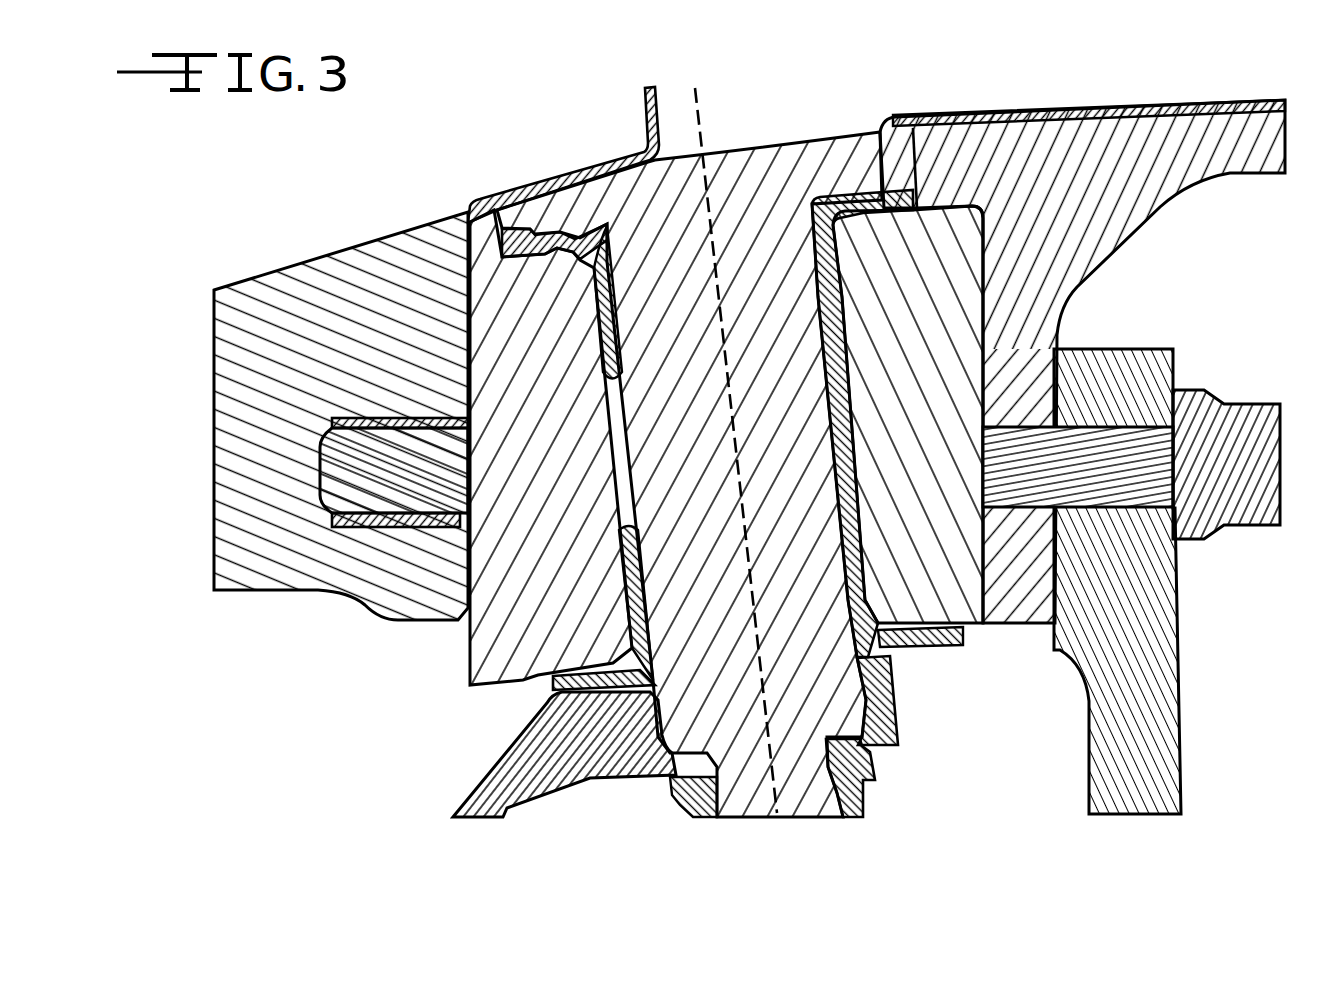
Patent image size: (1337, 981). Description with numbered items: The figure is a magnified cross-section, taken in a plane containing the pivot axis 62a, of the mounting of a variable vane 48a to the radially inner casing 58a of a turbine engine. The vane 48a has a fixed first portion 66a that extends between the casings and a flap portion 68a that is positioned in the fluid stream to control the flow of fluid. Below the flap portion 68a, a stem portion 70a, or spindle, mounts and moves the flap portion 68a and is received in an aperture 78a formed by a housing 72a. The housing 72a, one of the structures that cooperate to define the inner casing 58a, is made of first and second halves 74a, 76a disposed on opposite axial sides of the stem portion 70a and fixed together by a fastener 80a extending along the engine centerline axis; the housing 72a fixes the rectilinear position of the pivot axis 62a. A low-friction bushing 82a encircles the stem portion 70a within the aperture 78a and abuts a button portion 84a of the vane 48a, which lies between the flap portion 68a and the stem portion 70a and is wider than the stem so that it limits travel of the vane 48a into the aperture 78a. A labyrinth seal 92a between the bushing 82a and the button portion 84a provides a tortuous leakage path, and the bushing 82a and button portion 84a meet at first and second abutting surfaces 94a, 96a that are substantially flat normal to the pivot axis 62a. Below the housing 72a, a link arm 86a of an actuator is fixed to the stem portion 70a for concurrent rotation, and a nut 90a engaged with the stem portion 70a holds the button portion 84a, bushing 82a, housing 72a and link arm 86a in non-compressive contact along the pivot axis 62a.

The vane 48a is at (740, 75).
The radially inner casing 58a is at (323, 235).
The pivot axis 62a is at (705, 128).
The first portion 66a is at (402, 141).
The flap portion 68a is at (850, 107).
The stem portion 70a is at (824, 620).
The housing 72a is at (440, 657).
The first half 74a is at (560, 630).
The second half 76a is at (945, 574).
The aperture 78a is at (618, 498).
The fastener 80a is at (1125, 495).
The bushing 82a is at (850, 288).
The button portion 84a is at (581, 206).
The link arm 86a is at (880, 690).
The nut 90a is at (868, 771).
The labyrinth seal 92a is at (870, 190).
The first abutting surface 94a is at (835, 200).
The second abutting surface 96a is at (572, 233).